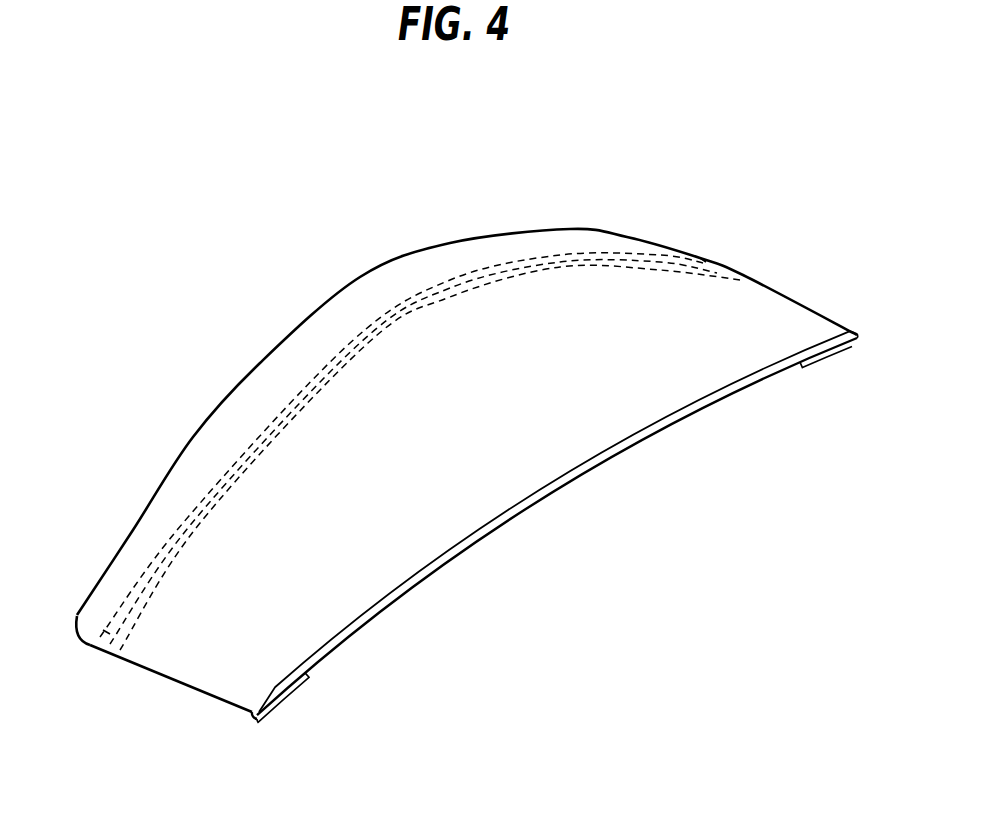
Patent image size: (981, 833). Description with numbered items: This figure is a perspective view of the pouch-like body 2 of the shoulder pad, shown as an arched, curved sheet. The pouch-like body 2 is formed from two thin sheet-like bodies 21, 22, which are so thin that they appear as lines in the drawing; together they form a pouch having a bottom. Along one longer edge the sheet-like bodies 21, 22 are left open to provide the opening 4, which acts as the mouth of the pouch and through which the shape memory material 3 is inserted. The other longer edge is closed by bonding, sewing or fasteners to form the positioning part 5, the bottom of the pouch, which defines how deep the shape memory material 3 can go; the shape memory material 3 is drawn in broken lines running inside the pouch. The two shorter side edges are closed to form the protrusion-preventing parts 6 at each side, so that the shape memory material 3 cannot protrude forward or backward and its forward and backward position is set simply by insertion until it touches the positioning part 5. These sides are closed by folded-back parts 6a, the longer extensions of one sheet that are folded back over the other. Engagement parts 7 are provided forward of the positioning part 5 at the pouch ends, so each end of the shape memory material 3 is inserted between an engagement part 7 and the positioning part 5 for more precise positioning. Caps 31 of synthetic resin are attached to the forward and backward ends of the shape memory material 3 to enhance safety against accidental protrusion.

The pouch-like body 2 is at (554, 525).
The shape memory material 3 is at (440, 300).
The opening 4 is at (554, 525).
The positioning part 5 is at (350, 343).
The protrusion-preventing part 6 is at (743, 277).
The folded-back part 6a is at (283, 703).
The engagement part 7 is at (723, 278).
The sheet-like body 21 is at (558, 477).
The sheet-like body 22 is at (593, 470).
The cap 31 is at (700, 262).